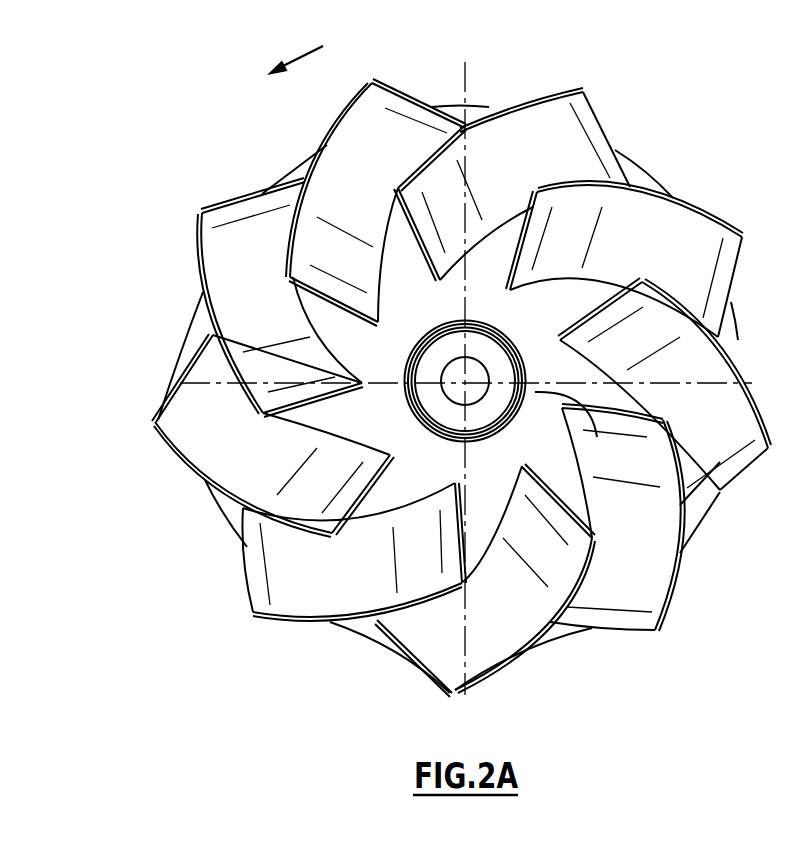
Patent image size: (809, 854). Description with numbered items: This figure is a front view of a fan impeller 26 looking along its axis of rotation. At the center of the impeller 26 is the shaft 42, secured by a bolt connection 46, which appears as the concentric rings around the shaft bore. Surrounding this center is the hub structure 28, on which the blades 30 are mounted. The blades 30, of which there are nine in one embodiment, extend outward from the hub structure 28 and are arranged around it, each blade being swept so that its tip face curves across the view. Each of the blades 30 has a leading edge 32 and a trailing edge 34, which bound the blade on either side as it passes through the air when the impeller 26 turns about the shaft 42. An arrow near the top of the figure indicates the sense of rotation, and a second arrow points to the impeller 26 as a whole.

The impeller 26 is at (435, 424).
The hub structure 28 is at (590, 410).
The blades 30 is at (250, 473).
The leading edge 32 is at (362, 508).
The trailing edge 34 is at (157, 410).
The shaft 42 is at (465, 381).
The bolt connection 46 is at (448, 432).